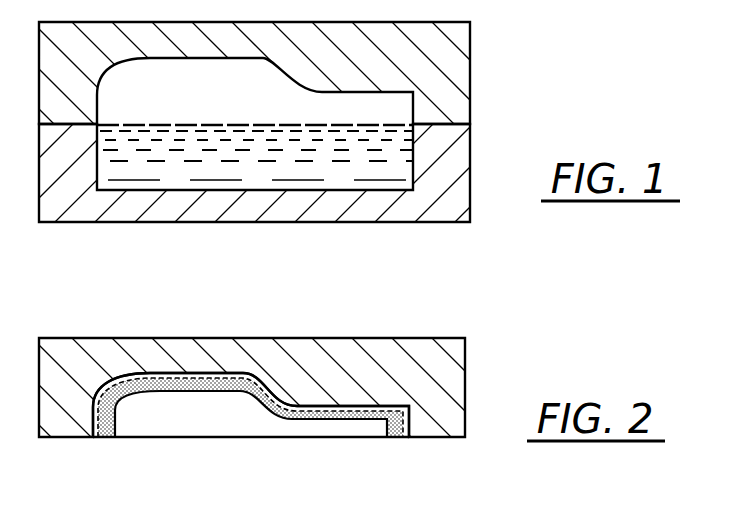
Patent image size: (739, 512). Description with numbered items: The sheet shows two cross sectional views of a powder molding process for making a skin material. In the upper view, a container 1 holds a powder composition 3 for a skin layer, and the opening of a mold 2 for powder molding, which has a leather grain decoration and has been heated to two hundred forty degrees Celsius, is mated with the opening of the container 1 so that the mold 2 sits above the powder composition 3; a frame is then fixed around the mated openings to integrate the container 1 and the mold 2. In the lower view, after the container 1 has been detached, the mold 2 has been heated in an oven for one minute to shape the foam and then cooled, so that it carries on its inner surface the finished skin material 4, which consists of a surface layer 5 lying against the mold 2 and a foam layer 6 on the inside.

In FIG. 1, the container 1 is at (453, 198).
In FIG. 1, the mold for powder molding 2 is at (453, 67).
In FIG. 2, the mold for powder molding 2 is at (335, 350).
In FIG. 1, the powder composition 3 is at (388, 158).
In FIG. 2, the skin material 4 is at (269, 441).
In FIG. 2, the surface layer 5 is at (410, 438).
In FIG. 2, the foam layer 6 is at (395, 438).